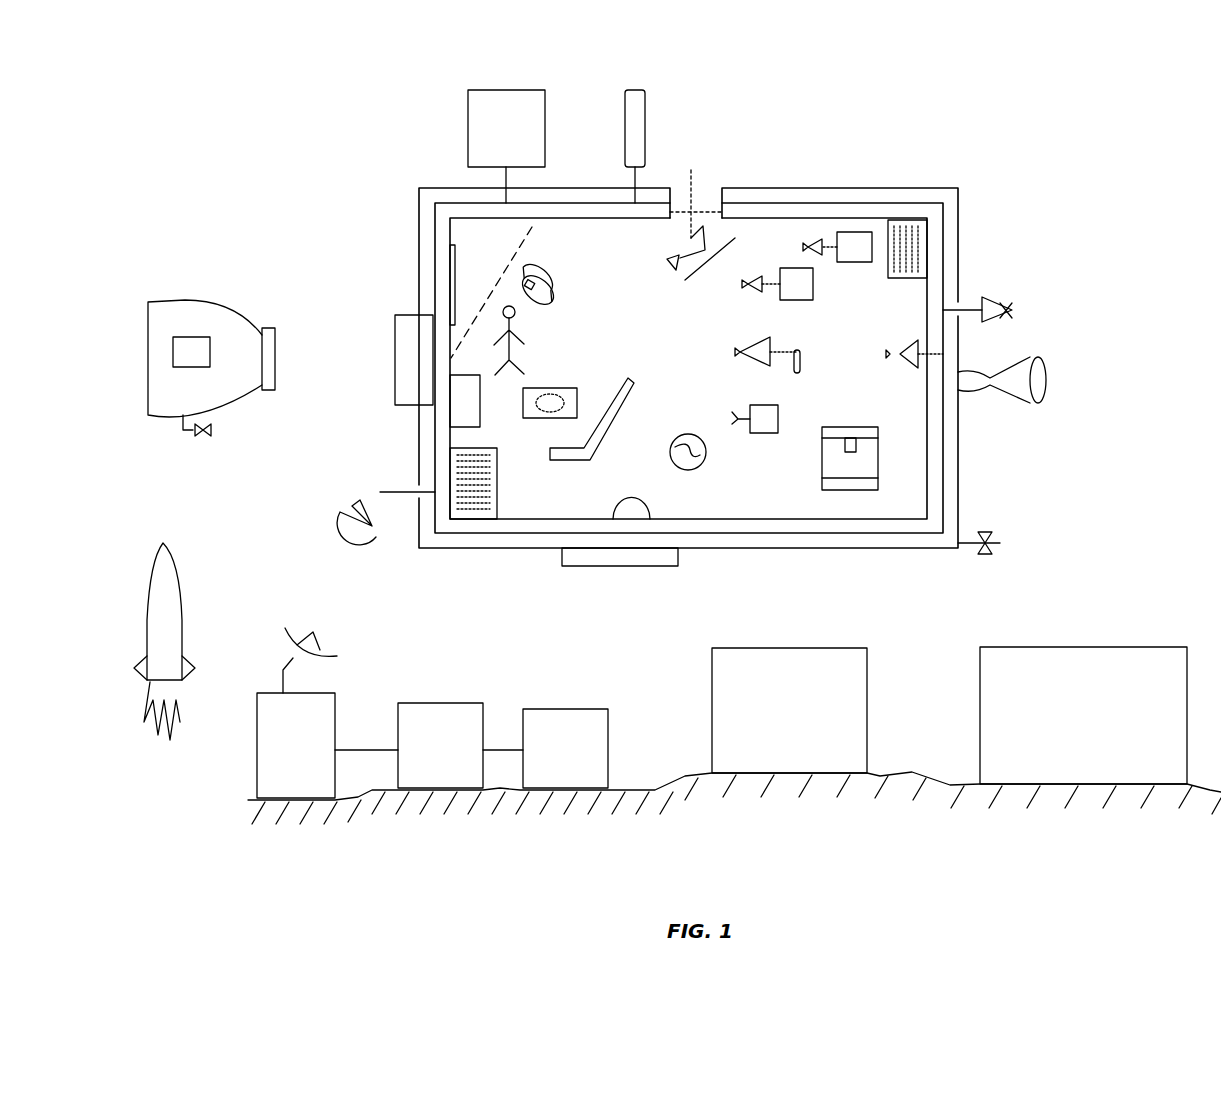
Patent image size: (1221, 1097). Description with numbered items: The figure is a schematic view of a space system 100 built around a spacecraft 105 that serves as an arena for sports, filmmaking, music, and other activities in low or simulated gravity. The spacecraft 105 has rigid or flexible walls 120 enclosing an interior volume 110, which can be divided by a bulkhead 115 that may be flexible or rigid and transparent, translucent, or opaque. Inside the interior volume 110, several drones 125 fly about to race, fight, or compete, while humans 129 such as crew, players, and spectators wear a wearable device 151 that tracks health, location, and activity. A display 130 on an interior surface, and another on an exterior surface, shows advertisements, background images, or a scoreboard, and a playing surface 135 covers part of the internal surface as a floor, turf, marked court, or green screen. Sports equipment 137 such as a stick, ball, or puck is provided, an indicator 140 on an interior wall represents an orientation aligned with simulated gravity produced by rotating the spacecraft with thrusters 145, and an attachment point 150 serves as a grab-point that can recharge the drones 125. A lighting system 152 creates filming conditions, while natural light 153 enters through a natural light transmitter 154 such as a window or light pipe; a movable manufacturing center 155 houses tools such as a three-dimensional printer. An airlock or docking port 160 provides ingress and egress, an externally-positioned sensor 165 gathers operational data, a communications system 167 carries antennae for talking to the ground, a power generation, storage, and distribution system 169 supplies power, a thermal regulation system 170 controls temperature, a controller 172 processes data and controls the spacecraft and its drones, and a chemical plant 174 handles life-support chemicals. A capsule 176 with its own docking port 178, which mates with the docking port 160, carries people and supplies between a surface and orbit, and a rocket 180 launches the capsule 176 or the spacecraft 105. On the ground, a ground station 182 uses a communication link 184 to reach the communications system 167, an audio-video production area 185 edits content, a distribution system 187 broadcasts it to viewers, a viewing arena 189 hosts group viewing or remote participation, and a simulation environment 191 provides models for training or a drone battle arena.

The space system 100 is at (1012, 132).
The spacecraft 105 is at (937, 188).
The interior volume 110 is at (588, 306).
The bulkhead 115 is at (532, 227).
The wall 120 is at (419, 215).
The drone 125 is at (797, 268).
The human 129 is at (522, 337).
The display 130 is at (447, 272).
The playing surface 135 is at (555, 388).
The sports equipment 137 is at (563, 462).
The indicator 140 is at (480, 425).
The thruster 145 is at (1047, 362).
The attachment point 150 is at (650, 506).
The wearable device 151 is at (555, 292).
The lighting system 152 is at (698, 273).
The natural light 153 is at (672, 270).
The natural light transmitter 154 is at (710, 205).
The manufacturing center 155 is at (878, 458).
The airlock and/or docking port 160 is at (395, 355).
The externally-positioned sensor 165 is at (990, 300).
The communications system 167 is at (907, 360).
The power generation, storage, and/or distribution system 169 is at (468, 138).
The thermal regulation system 170 is at (645, 96).
The computer system or controller 172 is at (465, 508).
The chemical plant 174 is at (915, 255).
The capsule 176 is at (160, 300).
The airlock and/or docking port 178 is at (275, 368).
The rocket 180 is at (183, 592).
The ground station 182 is at (327, 745).
The communication link 184 is at (337, 652).
The audio-video production area 185 is at (460, 745).
The distribution system 187 is at (565, 748).
The viewing arena 189 is at (789, 710).
The simulation environment 191 is at (1083, 715).